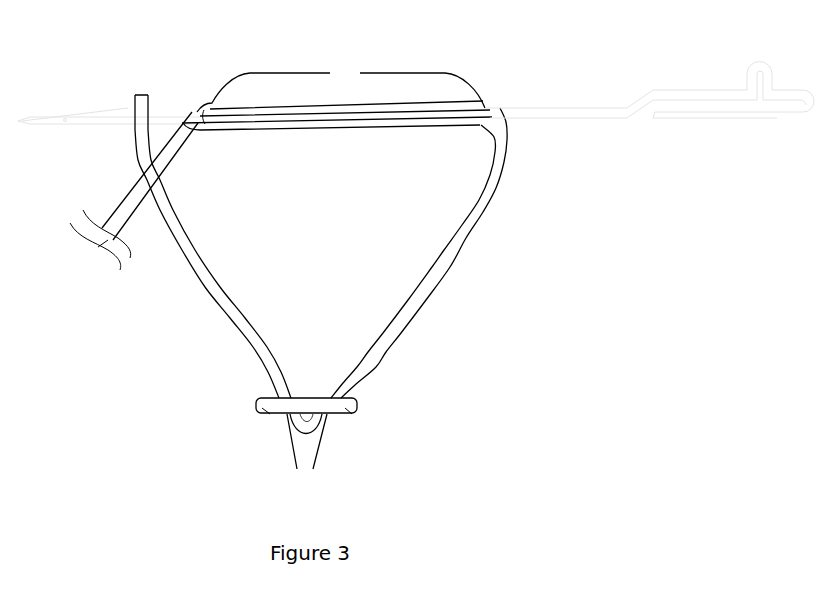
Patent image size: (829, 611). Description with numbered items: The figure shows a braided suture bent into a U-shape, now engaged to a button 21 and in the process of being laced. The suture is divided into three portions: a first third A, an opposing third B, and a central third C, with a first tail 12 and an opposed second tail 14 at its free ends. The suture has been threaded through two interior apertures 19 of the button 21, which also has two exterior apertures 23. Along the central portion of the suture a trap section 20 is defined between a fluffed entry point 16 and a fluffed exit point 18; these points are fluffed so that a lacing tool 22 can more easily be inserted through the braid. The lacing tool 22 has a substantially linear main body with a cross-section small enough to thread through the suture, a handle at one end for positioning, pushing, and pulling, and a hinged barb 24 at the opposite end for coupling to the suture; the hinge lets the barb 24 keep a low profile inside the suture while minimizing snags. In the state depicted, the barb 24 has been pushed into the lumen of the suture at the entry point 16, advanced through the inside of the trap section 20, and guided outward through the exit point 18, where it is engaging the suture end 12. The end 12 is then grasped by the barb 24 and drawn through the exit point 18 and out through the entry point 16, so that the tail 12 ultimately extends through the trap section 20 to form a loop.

The first tail 12 is at (149, 113).
The second tail 14 is at (98, 247).
The entry point 16 is at (507, 105).
The exit point 18 is at (209, 106).
The interior apertures 19 is at (307, 455).
The trap section 20 is at (337, 95).
The button 21 is at (360, 406).
The lacing tool 22 is at (573, 99).
The exterior apertures 23 is at (270, 417).
The hinged barb 24 is at (47, 103).
The first third A is at (205, 288).
The opposing third B is at (122, 196).
The central third C is at (397, 105).